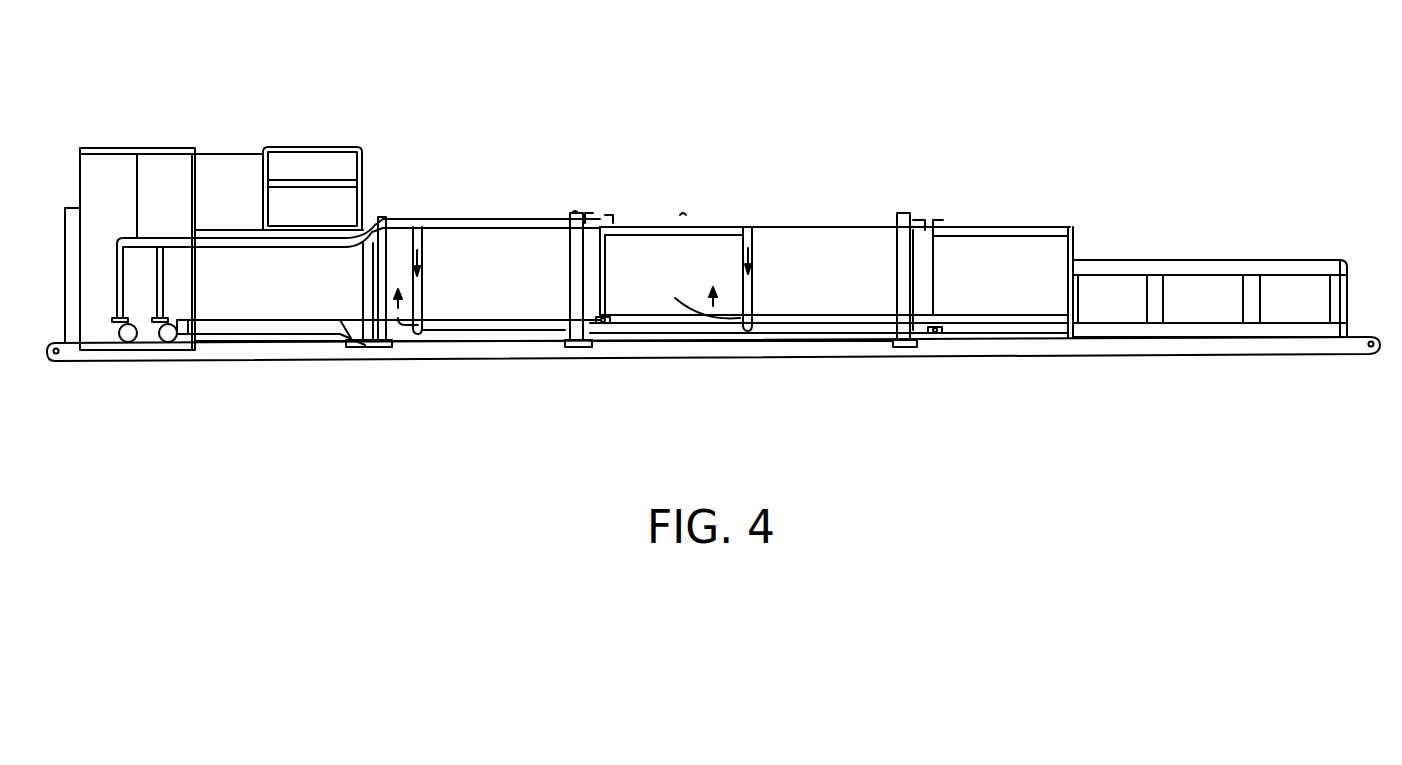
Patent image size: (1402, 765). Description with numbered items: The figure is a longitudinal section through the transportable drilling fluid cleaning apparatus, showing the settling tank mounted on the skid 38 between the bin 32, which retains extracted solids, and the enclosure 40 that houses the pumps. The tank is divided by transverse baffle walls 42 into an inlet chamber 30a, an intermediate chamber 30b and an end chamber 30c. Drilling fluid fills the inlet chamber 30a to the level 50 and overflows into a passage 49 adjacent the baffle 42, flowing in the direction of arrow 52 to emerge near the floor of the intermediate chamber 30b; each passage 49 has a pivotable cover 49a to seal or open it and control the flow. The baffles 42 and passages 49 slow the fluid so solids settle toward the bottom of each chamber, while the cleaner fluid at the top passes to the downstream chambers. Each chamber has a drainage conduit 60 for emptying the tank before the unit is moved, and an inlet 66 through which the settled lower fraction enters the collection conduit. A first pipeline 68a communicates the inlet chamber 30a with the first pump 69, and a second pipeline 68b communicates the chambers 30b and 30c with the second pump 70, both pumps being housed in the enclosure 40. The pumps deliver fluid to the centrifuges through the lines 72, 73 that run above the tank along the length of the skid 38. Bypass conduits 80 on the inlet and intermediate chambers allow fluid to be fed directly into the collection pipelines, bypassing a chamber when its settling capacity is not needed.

The inlet chamber 30a is at (1027, 290).
The intermediate chamber 30b is at (673, 265).
The end chamber 30c is at (303, 295).
The bin 32 is at (1179, 247).
The skid 38 is at (870, 348).
The enclosure 40 is at (80, 172).
The baffle wall 42 is at (745, 268).
The passage 49 is at (757, 283).
The cover 49a is at (750, 240).
The level 50 is at (812, 230).
The arrow 52 is at (690, 296).
The drainage conduit 60 is at (903, 213).
The inlet 66 is at (910, 340).
The first pipeline 68a is at (785, 325).
The second pipeline 68b is at (525, 323).
The first pump 69 is at (175, 347).
The second pump 70 is at (130, 347).
The line 72 is at (148, 238).
The line 73 is at (222, 245).
The bypass conduit 80 is at (937, 333).